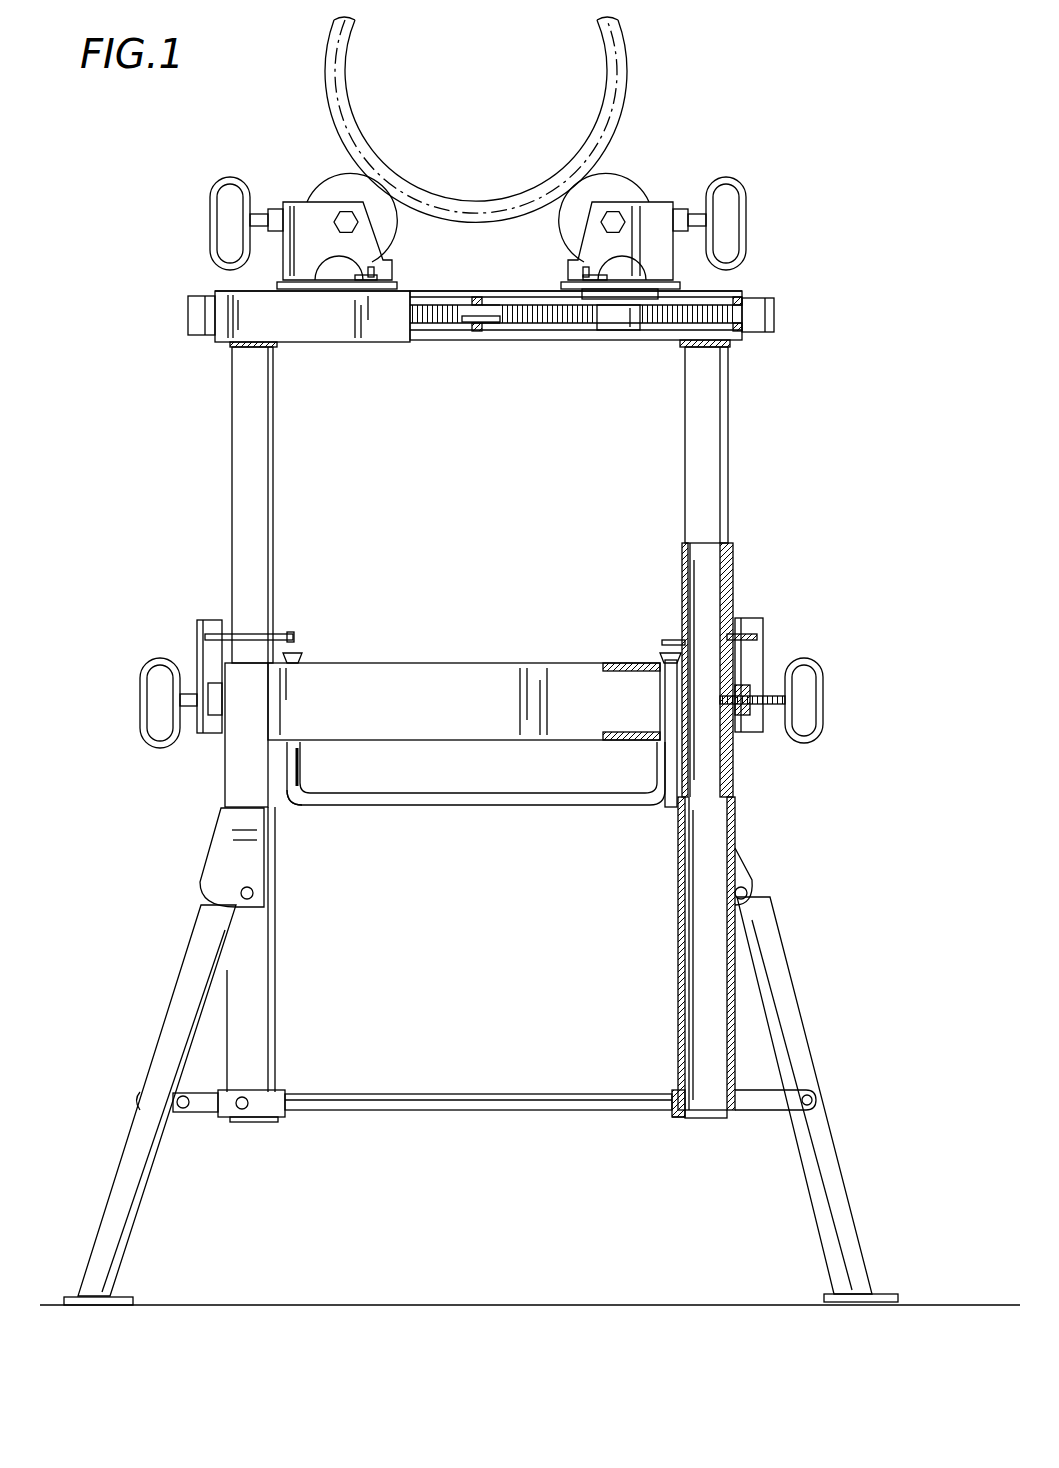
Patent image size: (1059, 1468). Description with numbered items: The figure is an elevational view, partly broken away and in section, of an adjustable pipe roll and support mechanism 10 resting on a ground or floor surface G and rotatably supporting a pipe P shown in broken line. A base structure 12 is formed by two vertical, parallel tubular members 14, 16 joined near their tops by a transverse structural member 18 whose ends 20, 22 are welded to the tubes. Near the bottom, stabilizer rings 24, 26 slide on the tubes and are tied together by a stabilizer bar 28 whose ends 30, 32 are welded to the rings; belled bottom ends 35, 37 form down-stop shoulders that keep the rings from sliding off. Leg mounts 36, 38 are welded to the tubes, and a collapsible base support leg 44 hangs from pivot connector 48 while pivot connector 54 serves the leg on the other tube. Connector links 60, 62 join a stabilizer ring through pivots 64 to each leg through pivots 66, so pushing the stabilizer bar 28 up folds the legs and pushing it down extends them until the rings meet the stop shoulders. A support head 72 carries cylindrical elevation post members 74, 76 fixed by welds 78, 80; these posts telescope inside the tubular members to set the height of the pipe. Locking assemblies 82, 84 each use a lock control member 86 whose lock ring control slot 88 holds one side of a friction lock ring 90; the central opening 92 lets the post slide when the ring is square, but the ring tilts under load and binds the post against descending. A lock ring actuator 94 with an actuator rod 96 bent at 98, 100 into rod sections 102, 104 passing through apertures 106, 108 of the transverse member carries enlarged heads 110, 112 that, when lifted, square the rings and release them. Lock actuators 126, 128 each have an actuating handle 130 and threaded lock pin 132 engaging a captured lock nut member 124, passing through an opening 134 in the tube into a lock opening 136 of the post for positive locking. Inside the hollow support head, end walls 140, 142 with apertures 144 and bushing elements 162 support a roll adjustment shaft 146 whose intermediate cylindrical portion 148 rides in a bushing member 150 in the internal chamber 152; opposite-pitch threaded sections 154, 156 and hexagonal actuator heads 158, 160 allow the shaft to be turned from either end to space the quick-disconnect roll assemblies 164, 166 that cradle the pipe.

The pipe P is at (635, 72).
The adjustable pipe roll and support mechanism 10 is at (772, 214).
The base structure 12 is at (220, 808).
The tubular member 14 is at (262, 972).
The tubular member 16 is at (677, 946).
The transverse structural member 18 is at (432, 672).
The end of transverse structural member 20 is at (266, 716).
The end of transverse structural member 22 is at (716, 745).
The stabilizer ring 24 is at (284, 1092).
The stabilizer ring 26 is at (673, 1090).
The stabilizer bar 28 is at (470, 1111).
The end of stabilizer bar 30 is at (282, 1117).
The end of stabilizer bar 32 is at (675, 1119).
The bottom end / down-stop shoulder 35 is at (276, 1123).
The leg mount 36 is at (226, 852).
The bottom end / down-stop shoulder 37 is at (705, 1120).
The leg mount 38 is at (745, 872).
The base support leg 44 is at (190, 980).
The pivot connector 48 is at (253, 894).
The pivot connector 54 is at (747, 894).
The connector link 60 is at (138, 1098).
The connector link 62 is at (205, 1113).
The pivot 64 is at (242, 1110).
The pivot 66 is at (182, 1105).
The support head 72 is at (320, 332).
The cylindrical elevation post member 74 is at (232, 410).
The cylindrical elevation post member 76 is at (729, 388).
The weld 78 is at (231, 345).
The weld 80 is at (682, 347).
The locking assembly 82 is at (185, 602).
The locking assembly 84 is at (780, 602).
The lock control member 86 is at (200, 642).
The lock ring control slot 88 is at (214, 620).
The lock ring 90 is at (293, 632).
The central opening 92 is at (690, 625).
The lock ring actuator 94 is at (545, 806).
The actuator rod 96 is at (440, 808).
The bend 98 is at (290, 810).
The bend 100 is at (682, 760).
The actuator rod section 102 is at (300, 766).
The actuator rod section 104 is at (666, 775).
The upper registering aperture 106 is at (640, 680).
The lower registering aperture 108 is at (662, 743).
The enlarged head 110 is at (305, 653).
The enlarged head 112 is at (662, 655).
The lock nut member 124 is at (748, 690).
The lock actuator 126 is at (140, 690).
The lock actuator 128 is at (823, 676).
The actuating handle 130 is at (824, 720).
The lock pin 132 is at (778, 712).
The opening 134 is at (736, 708).
The lock opening 136 is at (742, 650).
The end wall 140 is at (216, 292).
The end wall 142 is at (746, 301).
The aperture 144 is at (776, 312).
The roll adjustment shaft 146 is at (500, 324).
The intermediate cylindrical portion 148 is at (487, 312).
The bushing member 150 is at (477, 332).
The internal chamber 152 is at (425, 336).
The external threaded section 154 is at (432, 304).
The external threaded section 156 is at (615, 332).
The actuator head 158 is at (189, 318).
The actuator head 160 is at (776, 330).
The bushing element 162 is at (735, 296).
The quick-disconnect roll assembly 164 is at (305, 166).
The quick-disconnect roll assembly 166 is at (652, 166).
The ground or floor surface G is at (645, 1302).